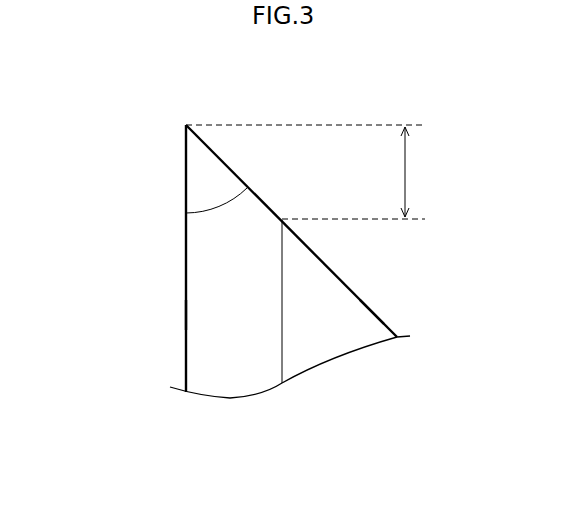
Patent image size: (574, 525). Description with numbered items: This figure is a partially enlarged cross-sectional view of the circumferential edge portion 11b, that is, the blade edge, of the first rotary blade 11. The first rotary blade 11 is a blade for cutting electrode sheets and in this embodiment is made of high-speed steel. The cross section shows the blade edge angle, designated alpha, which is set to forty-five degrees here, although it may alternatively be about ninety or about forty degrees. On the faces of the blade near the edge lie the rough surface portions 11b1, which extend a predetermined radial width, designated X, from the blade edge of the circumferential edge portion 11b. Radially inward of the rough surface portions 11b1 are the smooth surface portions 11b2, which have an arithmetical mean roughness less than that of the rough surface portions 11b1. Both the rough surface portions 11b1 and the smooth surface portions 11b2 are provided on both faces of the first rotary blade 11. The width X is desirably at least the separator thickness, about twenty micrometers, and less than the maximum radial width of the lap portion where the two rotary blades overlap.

The first rotary blade 11 is at (108, 229).
The circumferential edge portion 11b is at (239, 157).
The rough surface portion 11b1 is at (185, 178).
The smooth surface portion 11b2 is at (186, 316).